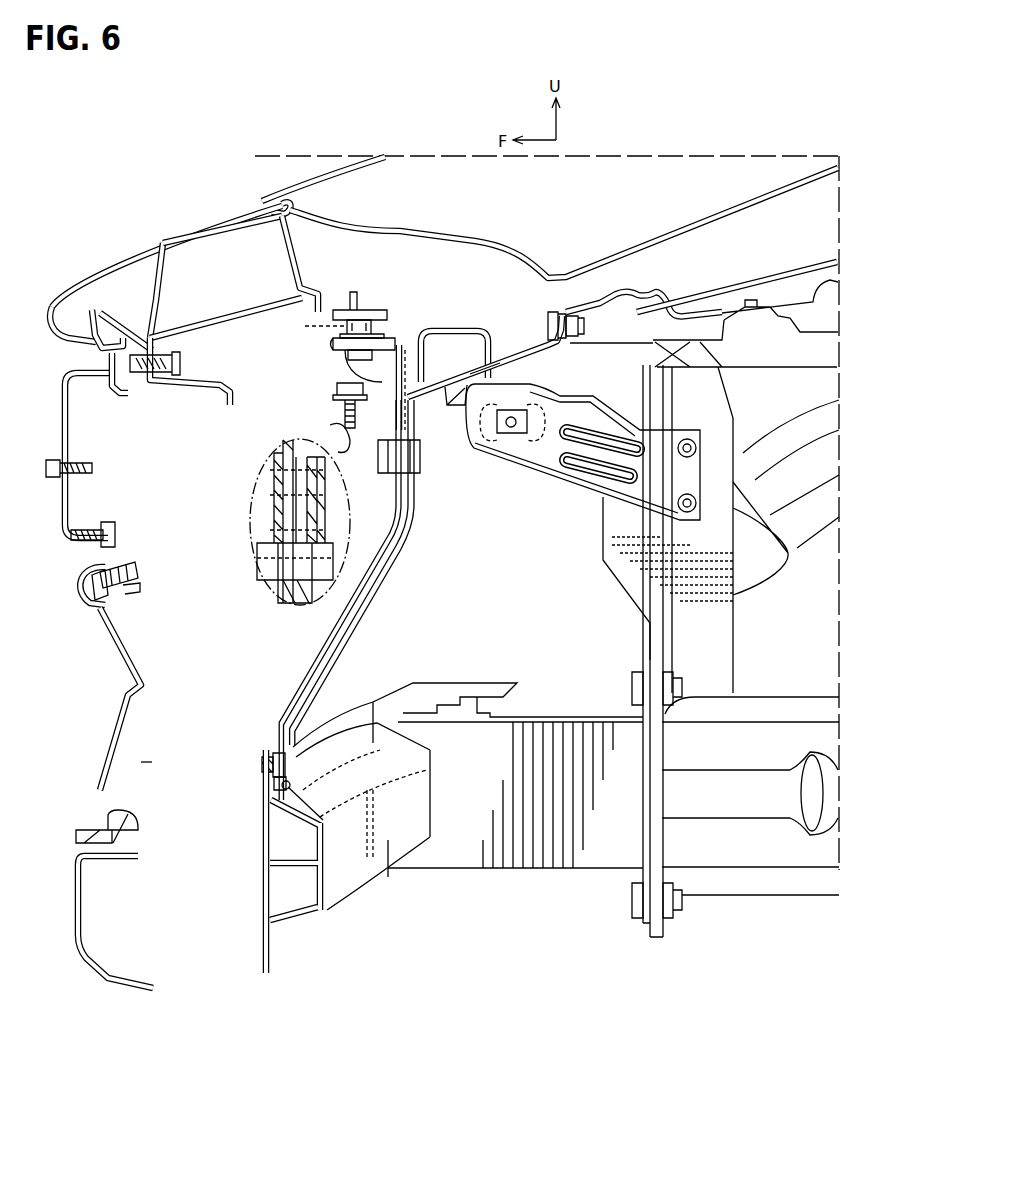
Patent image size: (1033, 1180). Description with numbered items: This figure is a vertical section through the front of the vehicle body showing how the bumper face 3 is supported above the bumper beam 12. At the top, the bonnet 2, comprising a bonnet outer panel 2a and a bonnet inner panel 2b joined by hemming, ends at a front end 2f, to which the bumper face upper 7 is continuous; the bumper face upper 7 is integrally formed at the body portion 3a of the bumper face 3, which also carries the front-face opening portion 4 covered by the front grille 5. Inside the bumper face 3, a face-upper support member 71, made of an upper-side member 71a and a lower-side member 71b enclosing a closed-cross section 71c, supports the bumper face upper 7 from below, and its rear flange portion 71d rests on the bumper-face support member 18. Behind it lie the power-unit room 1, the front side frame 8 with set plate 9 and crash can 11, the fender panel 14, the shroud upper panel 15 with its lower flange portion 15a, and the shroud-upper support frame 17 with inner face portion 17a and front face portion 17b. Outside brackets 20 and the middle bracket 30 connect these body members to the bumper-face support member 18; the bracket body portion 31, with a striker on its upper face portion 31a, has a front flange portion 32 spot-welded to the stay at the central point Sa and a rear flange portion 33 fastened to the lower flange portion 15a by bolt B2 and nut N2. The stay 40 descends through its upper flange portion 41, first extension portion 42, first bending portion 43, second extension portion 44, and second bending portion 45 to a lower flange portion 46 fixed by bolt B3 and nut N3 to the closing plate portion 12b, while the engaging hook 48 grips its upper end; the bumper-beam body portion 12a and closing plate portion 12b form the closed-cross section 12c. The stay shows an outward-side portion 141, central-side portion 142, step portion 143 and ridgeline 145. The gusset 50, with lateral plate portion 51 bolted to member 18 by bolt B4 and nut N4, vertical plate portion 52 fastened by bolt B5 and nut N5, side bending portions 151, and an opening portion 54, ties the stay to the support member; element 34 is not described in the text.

The power-unit room 1 is at (712, 528).
The bonnet 2 is at (529, 198).
The bonnet outer panel 2a is at (346, 162).
The bonnet inner panel 2b is at (430, 232).
The front end 2f is at (262, 199).
The bumper face 3 is at (183, 216).
The body portion 3a is at (85, 923).
The front-face opening portion 4 is at (99, 558).
The front grille 5 is at (120, 663).
The bumper face upper 7 is at (147, 247).
The front side frame 8 is at (757, 897).
The set plate 9 is at (667, 925).
The crash can 11 is at (463, 868).
The bumper beam 12 is at (314, 851).
The bumper-beam body portion 12a is at (363, 890).
The closing plate portion 12b is at (262, 900).
The closed-cross section 12c is at (288, 895).
The fender panel 14 is at (777, 267).
The shroud upper panel 15 is at (658, 286).
The lower flange portion 15a is at (594, 278).
The shroud-upper support frame 17 is at (699, 540).
The vehicle-width-direction inner face portion 17a is at (720, 658).
The front face portion 17b is at (653, 580).
The bumper-face support member 18 is at (343, 342).
The outside bracket 20 is at (546, 485).
The middle bracket 30 is at (443, 397).
The bracket body portion 31 is at (537, 354).
The upper face portion 31a is at (500, 350).
The front flange portion 32 is at (468, 408).
The rear flange portion 33 is at (587, 312).
The loop member 34 is at (437, 330).
The stay 40 is at (330, 630).
The upper flange portion 41 is at (422, 420).
The first extension portion 42 is at (417, 493).
The first bending portion 43 is at (415, 527).
The second extension portion 44 is at (313, 667).
The second bending portion 45 is at (277, 747).
The lower flange portion 46 is at (320, 747).
The engaging hook 48 is at (260, 766).
The gusset 50 is at (415, 352).
The lateral plate portion 51 is at (333, 358).
The vertical plate portion 52 is at (404, 352).
The opening portion 54 is at (287, 447).
The face-upper support member 71 is at (254, 310).
The upper-side member 71a is at (163, 262).
The lower-side member 71b is at (210, 318).
The closed-cross section 71c is at (238, 268).
The rear flange portion 71d is at (368, 309).
The outward-side portion 141 is at (377, 593).
The central-side portion 142 is at (290, 703).
The step portion 143 is at (353, 620).
The stay-reinforcing ridgeline 145 is at (340, 647).
The bending portion 151 is at (280, 520).
The bolt B2 is at (547, 310).
The bolt B3 is at (290, 787).
The bolt B4 is at (374, 318).
The bolt B5 is at (258, 562).
The nut N2 is at (582, 314).
The nut N3 is at (272, 792).
The nut N4 is at (350, 358).
The nut N5 is at (320, 500).
The central point Sa is at (270, 487).